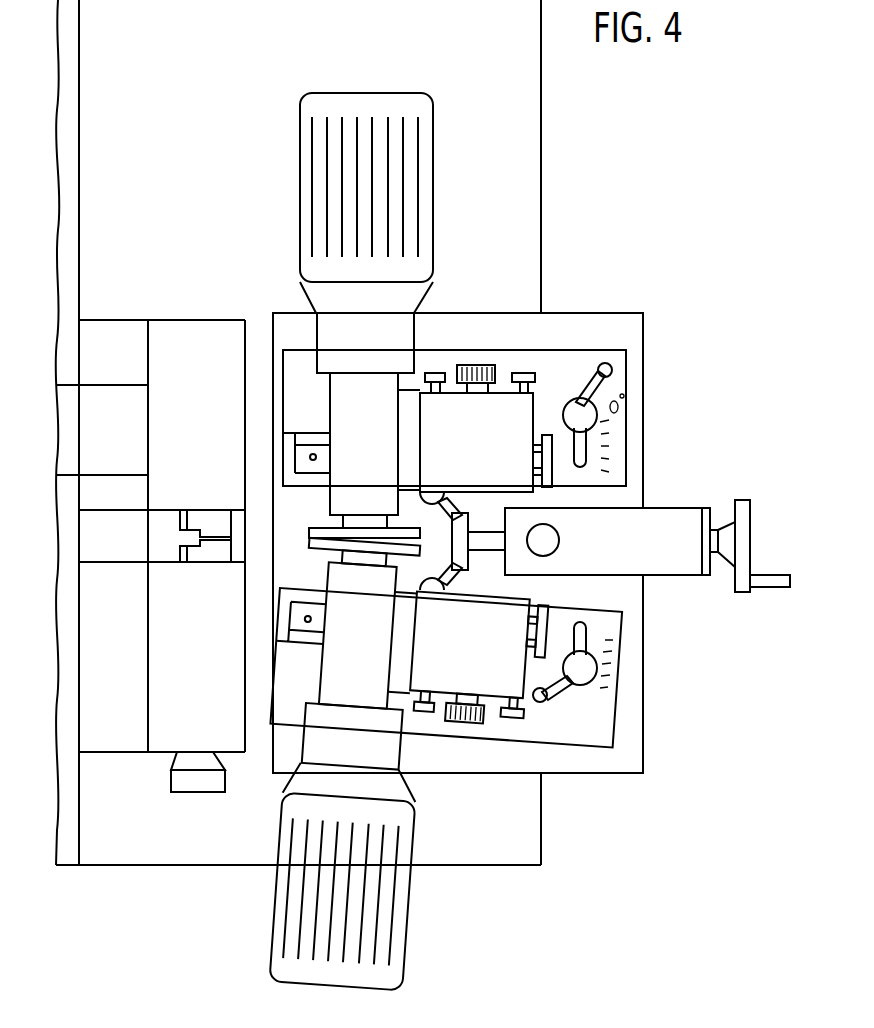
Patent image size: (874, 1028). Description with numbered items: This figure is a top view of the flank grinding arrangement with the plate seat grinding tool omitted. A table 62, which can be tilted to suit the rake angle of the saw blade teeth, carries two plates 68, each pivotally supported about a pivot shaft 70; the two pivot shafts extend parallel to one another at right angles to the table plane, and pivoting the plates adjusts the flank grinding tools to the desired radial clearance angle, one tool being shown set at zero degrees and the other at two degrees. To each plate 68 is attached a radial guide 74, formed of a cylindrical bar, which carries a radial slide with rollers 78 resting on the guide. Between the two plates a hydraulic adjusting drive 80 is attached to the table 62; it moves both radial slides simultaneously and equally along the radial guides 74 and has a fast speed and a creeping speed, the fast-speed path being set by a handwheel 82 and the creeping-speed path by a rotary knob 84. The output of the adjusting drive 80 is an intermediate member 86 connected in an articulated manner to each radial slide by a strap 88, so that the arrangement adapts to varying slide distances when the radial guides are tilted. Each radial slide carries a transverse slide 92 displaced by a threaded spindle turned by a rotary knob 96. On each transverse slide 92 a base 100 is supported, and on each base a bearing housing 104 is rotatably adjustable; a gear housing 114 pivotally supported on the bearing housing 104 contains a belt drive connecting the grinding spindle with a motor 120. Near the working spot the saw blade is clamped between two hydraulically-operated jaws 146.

The table 62 is at (618, 328).
The plate 68 is at (572, 365).
The pivot shaft 70 is at (313, 454).
The radial guide 74 is at (548, 470).
The roller 78 is at (433, 385).
The hydraulic adjusting drive 80 is at (683, 522).
The handwheel 82 is at (742, 580).
The rotary knob 84 is at (559, 538).
The intermediate member 86 is at (468, 528).
The strap 88 is at (448, 503).
The transverse slide 92 is at (454, 436).
The rotary knob 96 is at (483, 365).
The base 100 is at (410, 402).
The bearing housing 104 is at (367, 411).
The gear housing 114 is at (359, 355).
The motor 120 is at (433, 114).
The jaw 146 is at (213, 522).